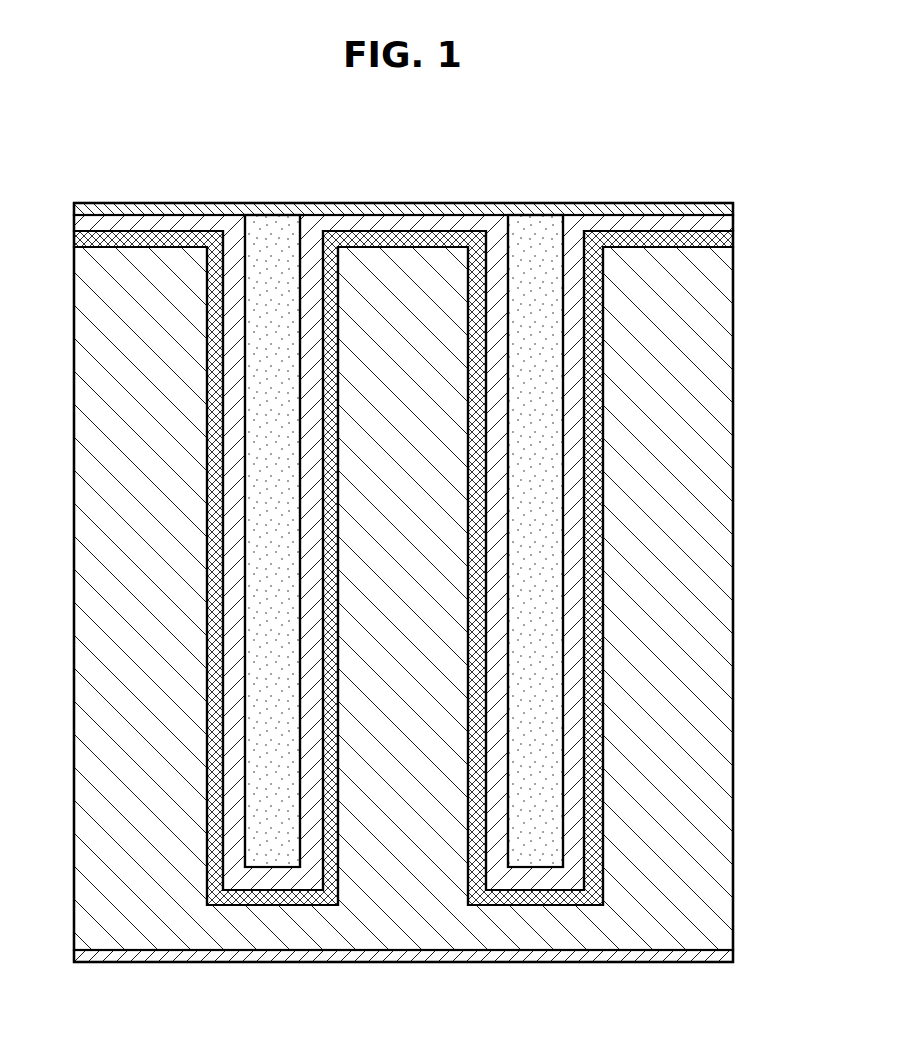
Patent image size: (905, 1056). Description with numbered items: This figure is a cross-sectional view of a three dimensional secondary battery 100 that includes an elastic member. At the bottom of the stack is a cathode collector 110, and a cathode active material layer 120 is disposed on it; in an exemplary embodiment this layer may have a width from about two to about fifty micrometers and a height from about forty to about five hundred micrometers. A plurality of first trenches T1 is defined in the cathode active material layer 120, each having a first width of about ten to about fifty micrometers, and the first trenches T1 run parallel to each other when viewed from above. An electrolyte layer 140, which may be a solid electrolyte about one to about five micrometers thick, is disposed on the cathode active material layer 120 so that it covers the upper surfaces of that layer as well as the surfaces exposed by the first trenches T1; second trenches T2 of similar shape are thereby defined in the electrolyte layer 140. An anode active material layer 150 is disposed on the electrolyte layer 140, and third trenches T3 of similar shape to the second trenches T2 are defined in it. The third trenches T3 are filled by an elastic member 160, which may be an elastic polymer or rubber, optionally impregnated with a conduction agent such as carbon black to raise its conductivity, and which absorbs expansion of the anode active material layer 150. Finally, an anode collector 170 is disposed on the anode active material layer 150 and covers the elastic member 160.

The three dimensional secondary battery 100 is at (727, 178).
The cathode collector 110 is at (728, 955).
The cathode active material layer 120 is at (718, 820).
The electrolyte layer 140 is at (728, 243).
The anode active material layer 150 is at (727, 224).
The elastic member 160 is at (537, 850).
The anode collector 170 is at (733, 209).
The first trenches T1 is at (603, 617).
The second trenches T2 is at (585, 550).
The third trenches T3 is at (563, 482).